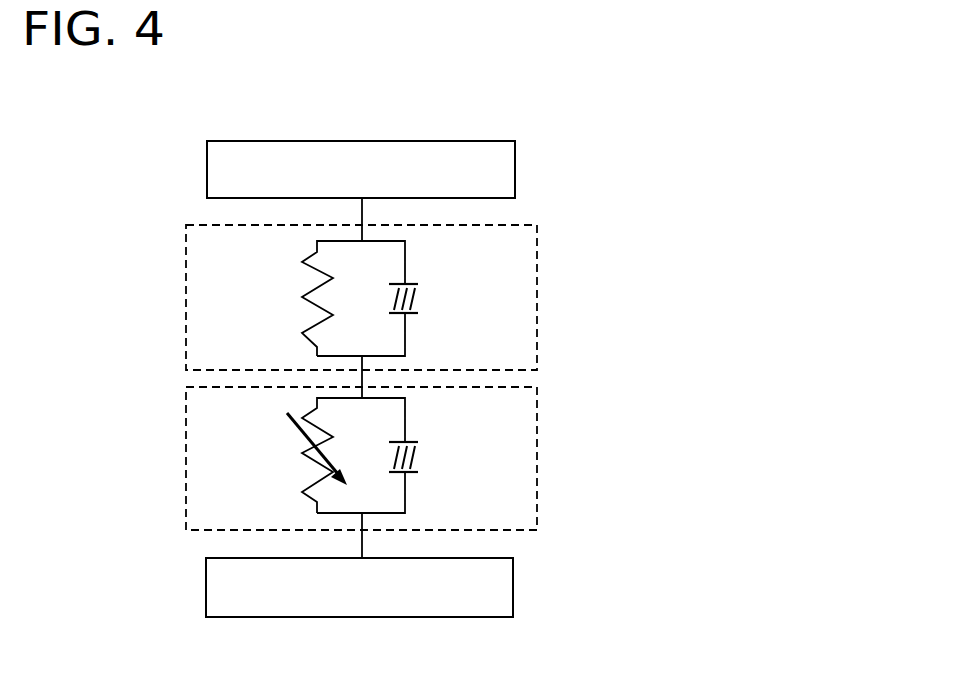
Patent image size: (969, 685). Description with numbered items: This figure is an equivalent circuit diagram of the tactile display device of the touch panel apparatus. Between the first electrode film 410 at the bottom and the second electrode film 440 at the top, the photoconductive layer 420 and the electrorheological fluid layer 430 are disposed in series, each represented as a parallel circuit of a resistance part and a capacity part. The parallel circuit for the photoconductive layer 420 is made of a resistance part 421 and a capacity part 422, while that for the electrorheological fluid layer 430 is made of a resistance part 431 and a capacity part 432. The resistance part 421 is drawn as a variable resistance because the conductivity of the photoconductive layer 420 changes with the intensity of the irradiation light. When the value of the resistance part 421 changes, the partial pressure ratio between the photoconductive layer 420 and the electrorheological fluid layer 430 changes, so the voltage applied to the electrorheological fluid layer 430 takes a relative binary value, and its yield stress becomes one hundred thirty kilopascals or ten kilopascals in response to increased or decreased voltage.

The first electrode film 410 is at (433, 617).
The photoconductive layer 420 is at (536, 440).
The resistance part 421 is at (282, 454).
The capacity part 422 is at (440, 455).
The electrorheological fluid layer 430 is at (537, 281).
The resistance part 431 is at (282, 295).
The capacity part 432 is at (440, 296).
The second electrode film 440 is at (433, 141).